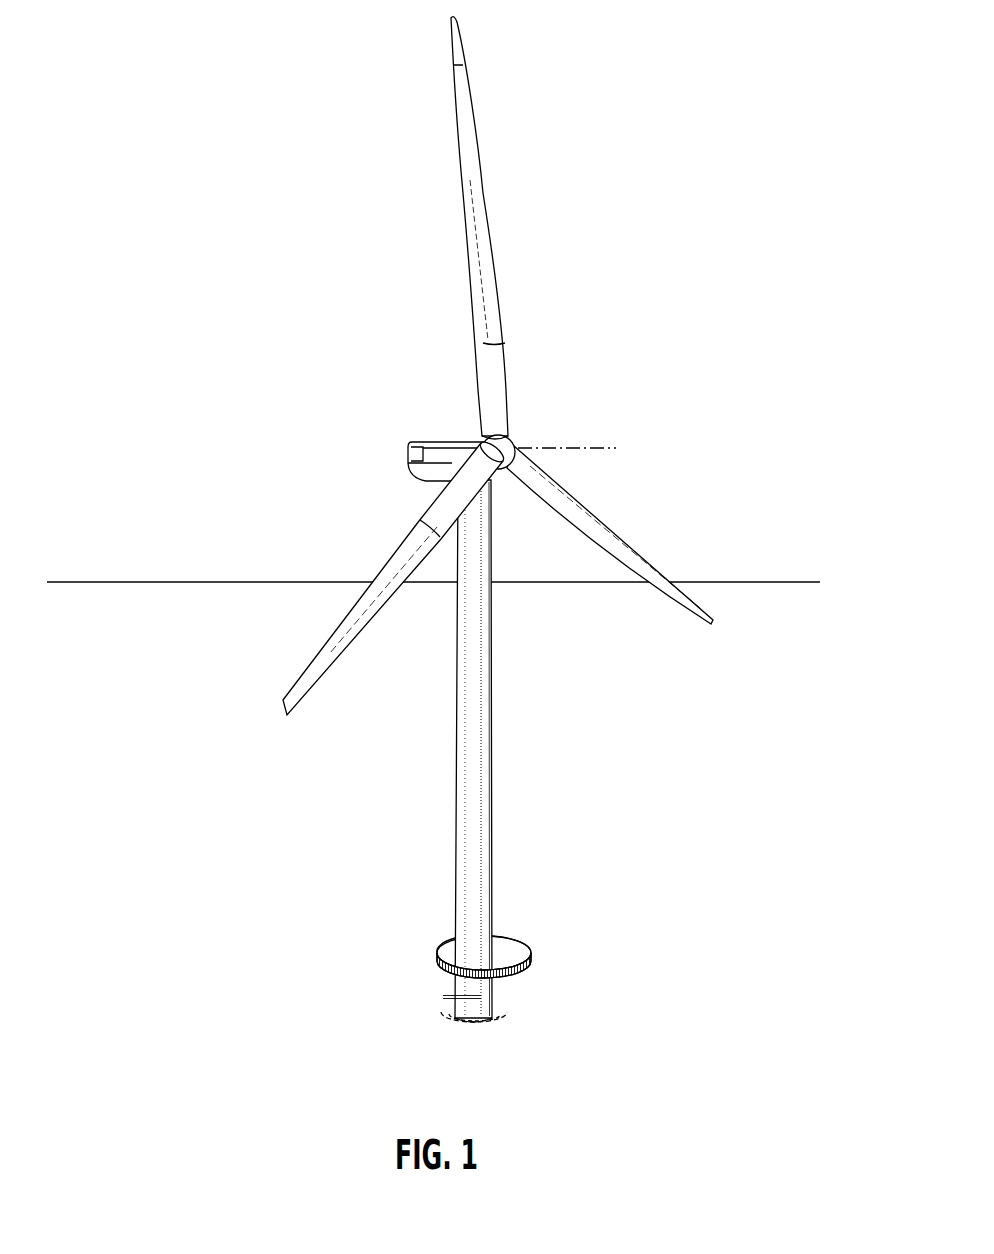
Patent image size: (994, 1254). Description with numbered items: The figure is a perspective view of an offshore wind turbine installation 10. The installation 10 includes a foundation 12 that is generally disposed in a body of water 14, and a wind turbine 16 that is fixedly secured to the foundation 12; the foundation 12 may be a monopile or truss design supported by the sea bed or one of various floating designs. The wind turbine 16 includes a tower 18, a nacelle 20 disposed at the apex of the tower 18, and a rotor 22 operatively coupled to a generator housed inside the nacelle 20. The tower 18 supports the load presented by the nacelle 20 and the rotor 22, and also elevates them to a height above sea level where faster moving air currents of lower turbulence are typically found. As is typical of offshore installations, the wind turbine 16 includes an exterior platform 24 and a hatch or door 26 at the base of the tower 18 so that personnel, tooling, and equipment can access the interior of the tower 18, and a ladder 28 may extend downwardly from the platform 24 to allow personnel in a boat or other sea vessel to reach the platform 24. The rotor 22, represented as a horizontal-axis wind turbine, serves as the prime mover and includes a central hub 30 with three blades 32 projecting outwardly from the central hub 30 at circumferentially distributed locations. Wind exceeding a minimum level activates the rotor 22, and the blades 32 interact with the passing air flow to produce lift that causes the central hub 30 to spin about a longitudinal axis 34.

The offshore wind turbine installation 10 is at (146, 493).
The foundation 12 is at (499, 996).
The body of water 14 is at (559, 1001).
The wind turbine 16 is at (573, 378).
The tower 18 is at (458, 716).
The nacelle 20 is at (446, 441).
The rotor 22 is at (523, 447).
The exterior platform 24 is at (522, 977).
The hatch or door 26 is at (488, 936).
The ladder 28 is at (452, 989).
The central hub 30 is at (515, 437).
The blade 32 is at (498, 297).
The longitudinal axis 34 is at (603, 449).